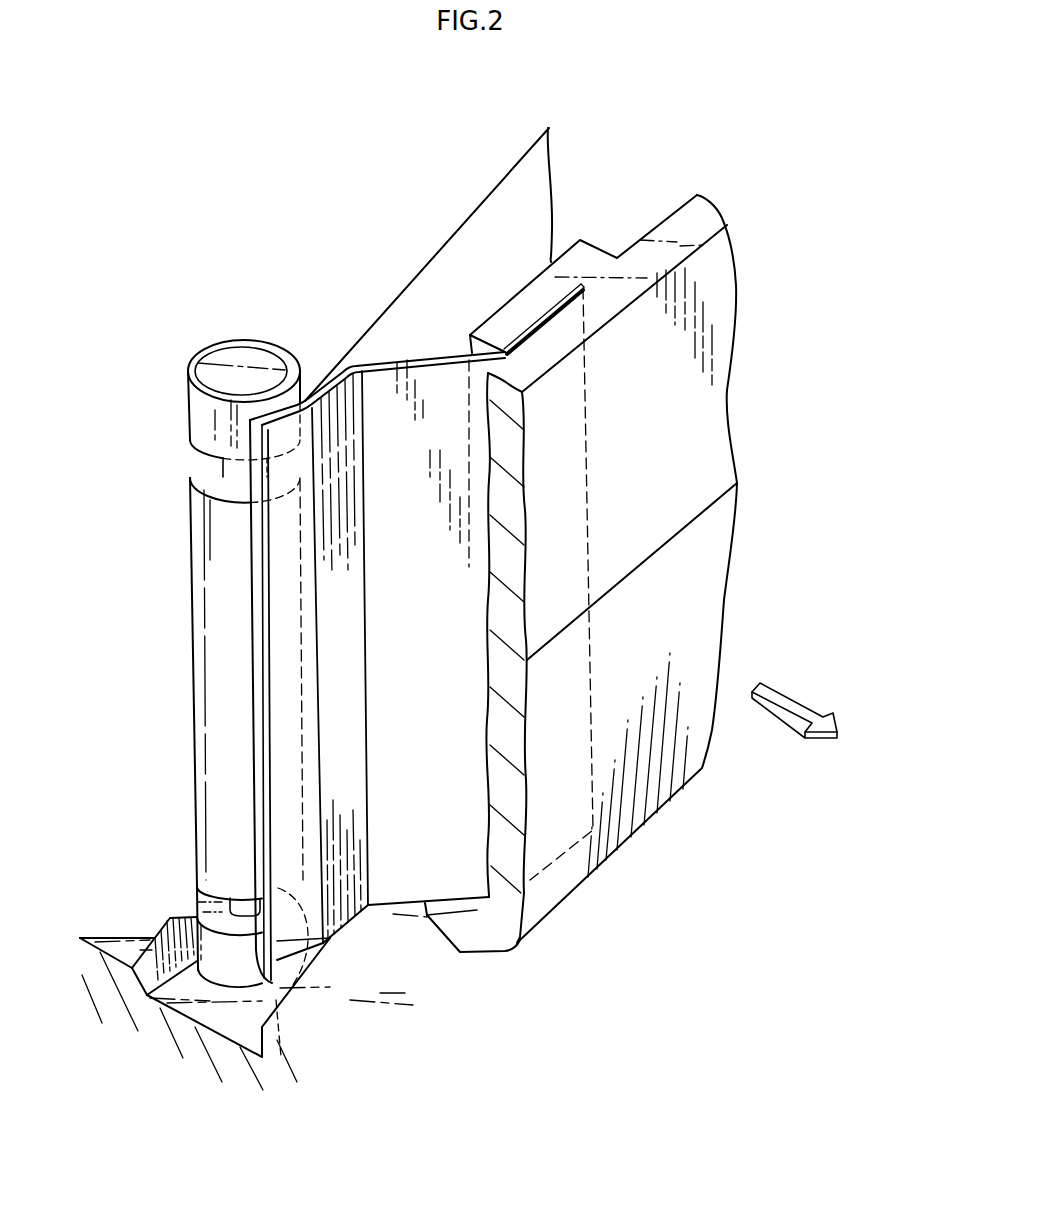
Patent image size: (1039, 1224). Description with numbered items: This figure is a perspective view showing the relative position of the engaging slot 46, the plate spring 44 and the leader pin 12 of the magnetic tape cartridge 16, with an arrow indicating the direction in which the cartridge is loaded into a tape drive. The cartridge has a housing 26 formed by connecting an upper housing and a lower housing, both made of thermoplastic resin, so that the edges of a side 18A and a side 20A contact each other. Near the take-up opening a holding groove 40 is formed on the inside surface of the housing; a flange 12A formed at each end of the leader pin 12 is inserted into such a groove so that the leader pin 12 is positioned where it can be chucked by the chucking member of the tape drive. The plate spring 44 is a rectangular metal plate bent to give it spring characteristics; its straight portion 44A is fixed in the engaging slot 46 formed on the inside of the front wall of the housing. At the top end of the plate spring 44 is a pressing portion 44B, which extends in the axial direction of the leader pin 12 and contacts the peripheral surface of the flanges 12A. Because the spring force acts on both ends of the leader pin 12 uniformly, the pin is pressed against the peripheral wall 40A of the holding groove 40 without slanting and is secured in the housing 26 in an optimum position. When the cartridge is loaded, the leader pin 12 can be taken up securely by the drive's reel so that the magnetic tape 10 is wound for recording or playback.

The magnetic tape 10 is at (444, 291).
The leader pin 12 is at (230, 684).
The flange 12A is at (204, 412).
The magnetic tape cartridge 16 is at (631, 502).
The side of the upper housing 18A is at (697, 423).
The side of the lower housing 20A is at (707, 583).
The housing 26 is at (718, 322).
The holding groove 40 is at (253, 983).
The peripheral wall 40A is at (180, 938).
The plate spring 44 is at (445, 619).
The straight portion 44A is at (550, 322).
The pressing portion 44B is at (287, 410).
The engaging slot 46 is at (515, 347).